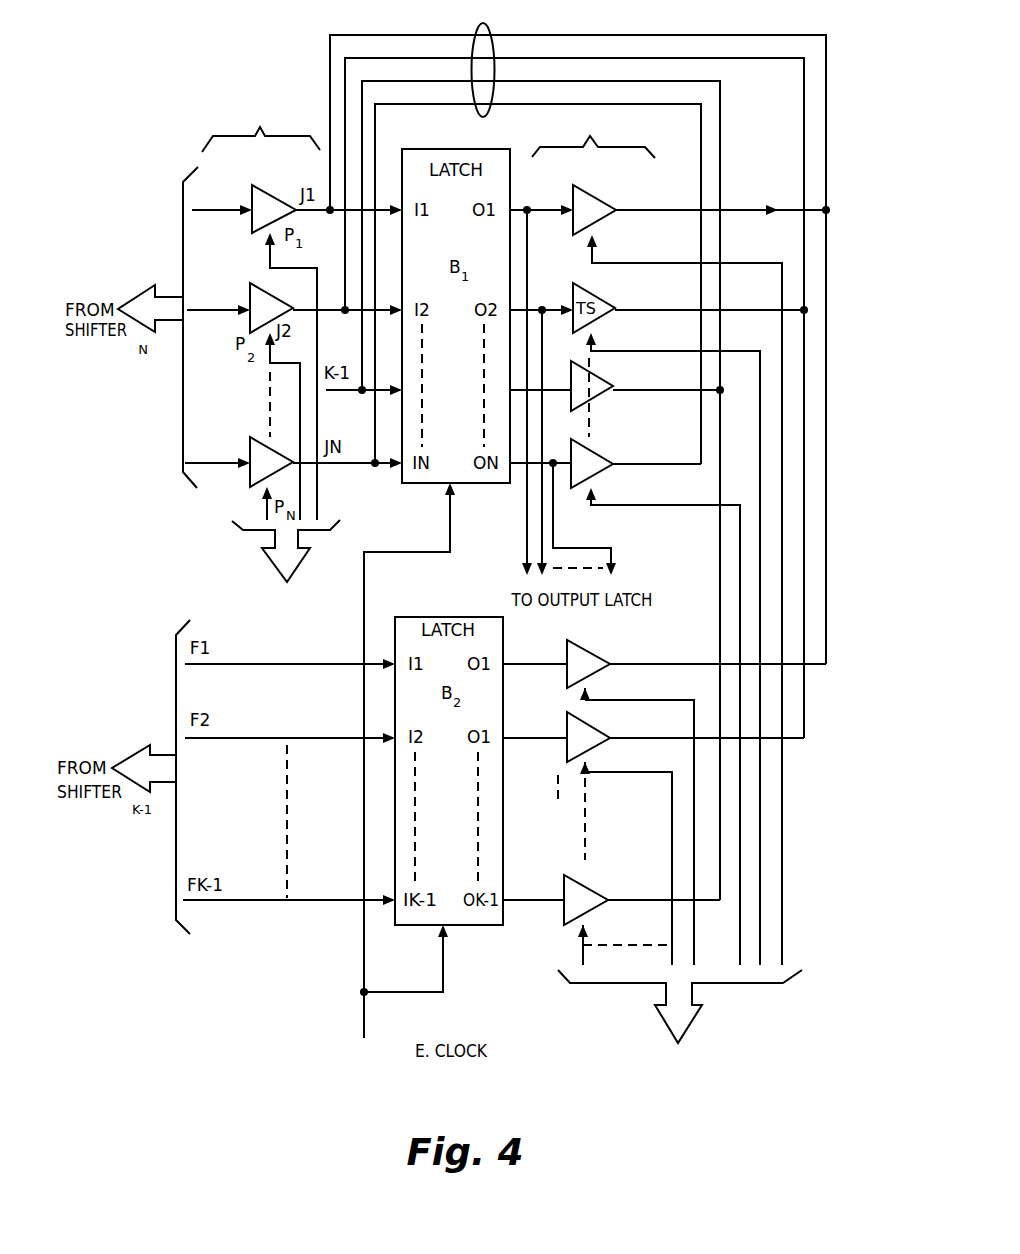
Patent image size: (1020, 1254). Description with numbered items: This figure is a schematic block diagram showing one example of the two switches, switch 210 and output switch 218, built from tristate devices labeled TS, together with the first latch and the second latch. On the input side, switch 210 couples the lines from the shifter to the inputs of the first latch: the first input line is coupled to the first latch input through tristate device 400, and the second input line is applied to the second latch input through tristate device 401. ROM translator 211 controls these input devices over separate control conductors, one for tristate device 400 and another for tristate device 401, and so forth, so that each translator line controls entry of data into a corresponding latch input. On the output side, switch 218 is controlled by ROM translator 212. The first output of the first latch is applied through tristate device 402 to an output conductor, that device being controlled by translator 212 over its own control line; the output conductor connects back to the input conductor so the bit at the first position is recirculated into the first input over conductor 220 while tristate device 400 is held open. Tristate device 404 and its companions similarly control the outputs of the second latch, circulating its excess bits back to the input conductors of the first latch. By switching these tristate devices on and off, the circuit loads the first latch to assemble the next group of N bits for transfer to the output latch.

The switch 210 is at (249, 278).
The ROM translator 211 is at (285, 592).
The ROM translator 212 is at (680, 1046).
The output switch 218 is at (681, 539).
The conductor 220 is at (489, 26).
The tristate device 400 is at (279, 194).
The tristate device 401 is at (258, 284).
The tristate device 402 is at (607, 194).
The tristate device 404 is at (598, 652).